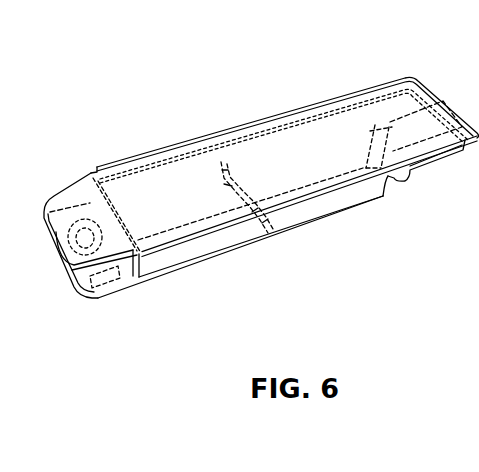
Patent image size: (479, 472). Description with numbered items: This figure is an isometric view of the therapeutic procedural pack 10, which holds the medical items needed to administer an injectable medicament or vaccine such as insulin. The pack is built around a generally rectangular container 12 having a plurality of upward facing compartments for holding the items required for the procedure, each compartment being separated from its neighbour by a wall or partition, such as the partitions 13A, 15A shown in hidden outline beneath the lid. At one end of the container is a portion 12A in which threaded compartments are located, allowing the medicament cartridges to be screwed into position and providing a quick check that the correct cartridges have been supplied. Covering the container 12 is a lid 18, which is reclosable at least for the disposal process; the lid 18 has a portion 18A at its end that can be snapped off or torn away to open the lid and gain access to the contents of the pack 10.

The therapeutic procedural pack 10 is at (343, 219).
The container 12 is at (245, 233).
The portion of the container 12A is at (117, 287).
The wall or partition 13A is at (223, 165).
The wall or partition 15A is at (390, 127).
The lid 18 is at (443, 102).
The snap-off portion of the lid 18A is at (77, 188).